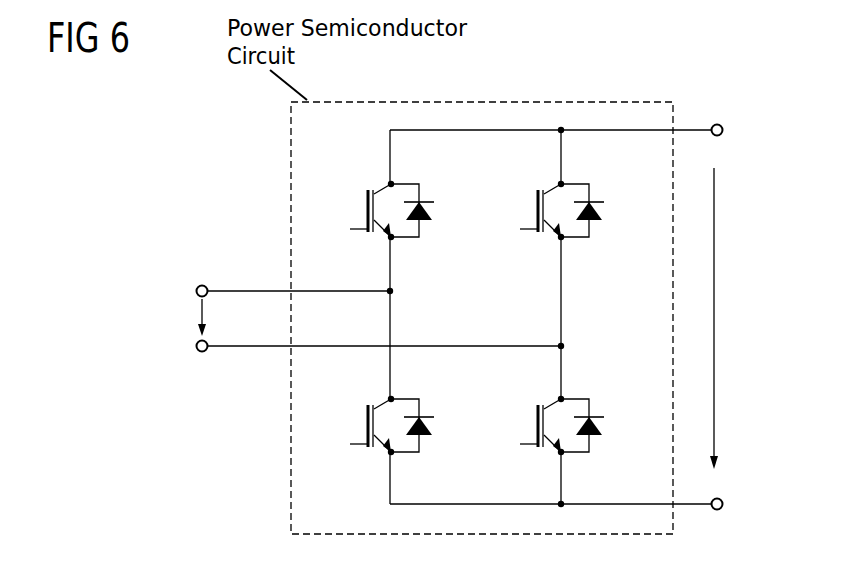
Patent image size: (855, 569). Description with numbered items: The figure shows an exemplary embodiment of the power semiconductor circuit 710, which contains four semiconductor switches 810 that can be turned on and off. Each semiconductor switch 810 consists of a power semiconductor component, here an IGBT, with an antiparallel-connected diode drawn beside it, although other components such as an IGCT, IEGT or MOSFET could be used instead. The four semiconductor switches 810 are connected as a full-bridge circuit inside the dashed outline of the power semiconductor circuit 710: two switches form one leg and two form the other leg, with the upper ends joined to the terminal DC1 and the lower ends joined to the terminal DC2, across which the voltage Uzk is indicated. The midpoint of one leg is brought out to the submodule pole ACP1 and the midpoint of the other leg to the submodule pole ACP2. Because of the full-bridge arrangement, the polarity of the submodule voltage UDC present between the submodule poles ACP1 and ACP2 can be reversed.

The power semiconductor circuit 710 is at (493, 101).
The semiconductor switch 810 is at (414, 172).
The submodule pole ACP1 is at (261, 292).
The submodule pole ACP2 is at (347, 347).
The first DC terminal DC1 is at (741, 132).
The second DC terminal DC2 is at (741, 506).
The submodule voltage UDC is at (225, 317).
The DC link voltage Uzk is at (732, 318).